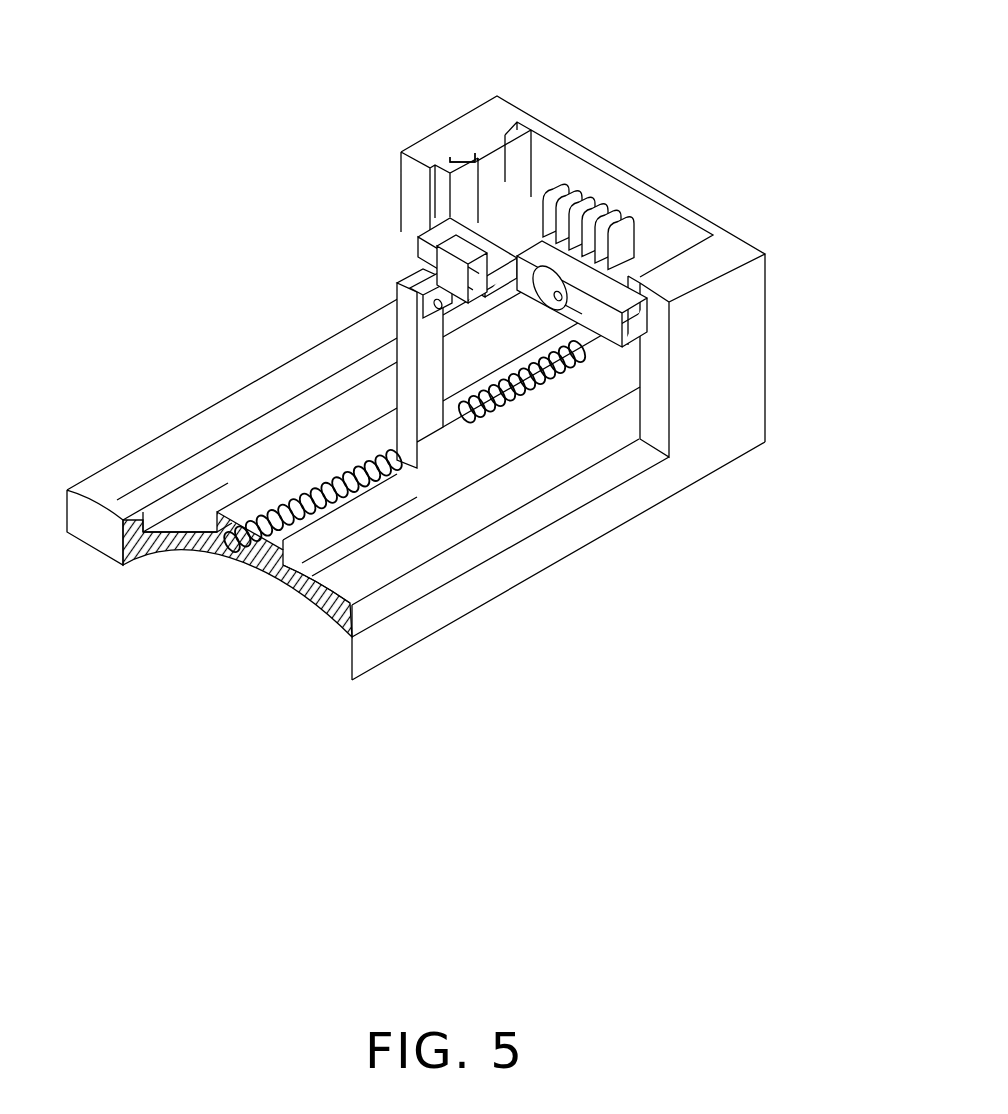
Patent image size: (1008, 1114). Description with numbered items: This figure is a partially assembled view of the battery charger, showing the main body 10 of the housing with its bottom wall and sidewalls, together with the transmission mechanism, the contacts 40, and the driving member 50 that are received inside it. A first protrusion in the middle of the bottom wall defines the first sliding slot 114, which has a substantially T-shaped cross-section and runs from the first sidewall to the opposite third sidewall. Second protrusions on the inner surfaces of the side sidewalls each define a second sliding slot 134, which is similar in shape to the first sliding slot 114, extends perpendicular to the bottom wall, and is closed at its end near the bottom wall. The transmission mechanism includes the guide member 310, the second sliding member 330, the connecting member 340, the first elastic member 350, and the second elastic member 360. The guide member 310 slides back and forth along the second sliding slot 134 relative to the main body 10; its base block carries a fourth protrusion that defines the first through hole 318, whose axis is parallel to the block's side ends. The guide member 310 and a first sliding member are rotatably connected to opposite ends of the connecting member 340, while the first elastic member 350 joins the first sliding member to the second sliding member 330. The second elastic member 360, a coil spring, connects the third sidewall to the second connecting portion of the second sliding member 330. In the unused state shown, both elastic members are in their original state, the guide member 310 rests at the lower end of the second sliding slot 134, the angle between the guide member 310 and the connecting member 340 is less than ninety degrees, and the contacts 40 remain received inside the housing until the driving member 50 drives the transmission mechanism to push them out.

The main body 10 is at (685, 472).
The second sliding slot 134 is at (497, 195).
The guide member 310 is at (497, 135).
The driving member 50 is at (428, 232).
The contacts 40 is at (621, 232).
The connecting member 340 is at (578, 300).
The first through hole 318 is at (572, 310).
The first elastic member 350 is at (525, 403).
The second sliding member 330 is at (427, 432).
The second elastic member 360 is at (378, 487).
The first sliding slot 114 is at (277, 553).